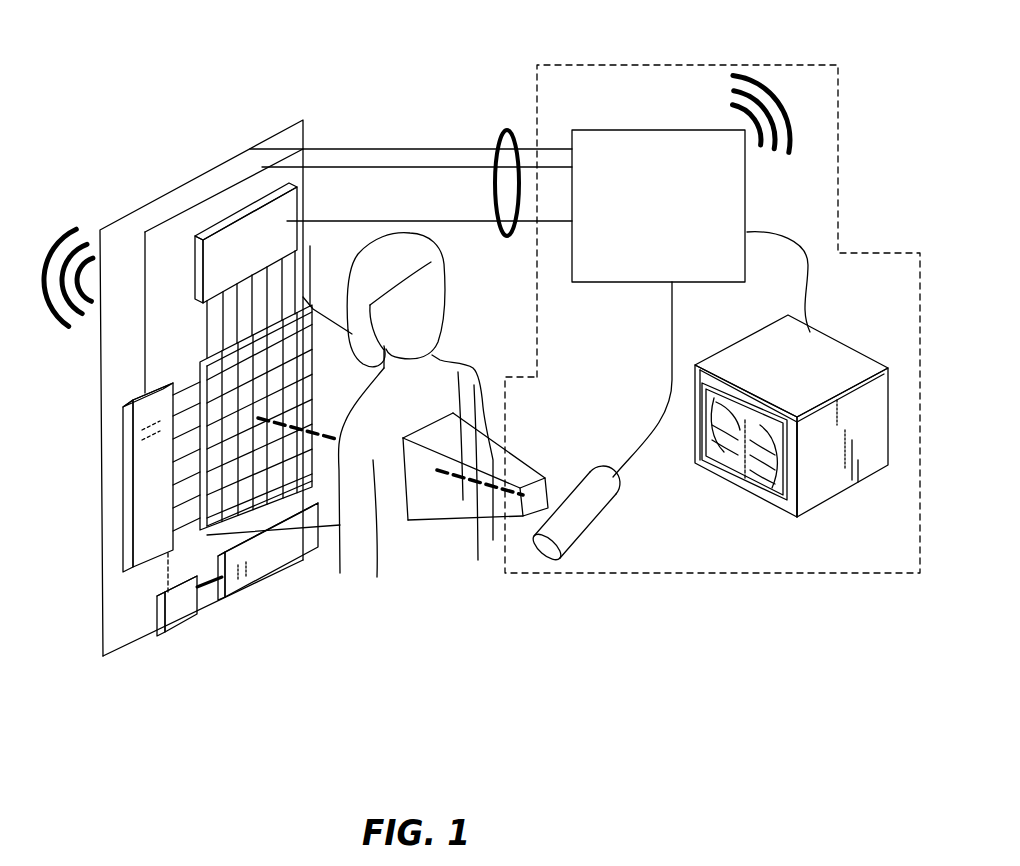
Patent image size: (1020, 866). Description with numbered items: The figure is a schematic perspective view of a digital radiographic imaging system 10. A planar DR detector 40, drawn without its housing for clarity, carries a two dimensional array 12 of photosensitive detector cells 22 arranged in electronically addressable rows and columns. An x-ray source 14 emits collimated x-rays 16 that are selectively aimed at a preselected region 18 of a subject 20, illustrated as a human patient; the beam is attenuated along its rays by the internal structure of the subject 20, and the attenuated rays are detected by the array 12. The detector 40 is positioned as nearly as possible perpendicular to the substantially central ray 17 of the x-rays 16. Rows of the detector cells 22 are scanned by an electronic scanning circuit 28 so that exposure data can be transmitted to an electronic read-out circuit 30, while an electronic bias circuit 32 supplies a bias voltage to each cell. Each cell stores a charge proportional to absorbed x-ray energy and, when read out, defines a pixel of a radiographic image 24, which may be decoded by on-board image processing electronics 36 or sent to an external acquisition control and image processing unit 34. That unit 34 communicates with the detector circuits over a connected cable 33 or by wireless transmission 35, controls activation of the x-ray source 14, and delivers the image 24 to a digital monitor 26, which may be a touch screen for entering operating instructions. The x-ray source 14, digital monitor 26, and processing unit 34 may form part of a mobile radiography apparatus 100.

The digital radiographic imaging system 10 is at (331, 29).
The two dimensional array 12 is at (300, 293).
The x-ray source 14 is at (606, 508).
The x-rays 16 is at (507, 453).
The central ray 17 is at (498, 488).
The preselected region 18 is at (447, 407).
The subject 20 is at (455, 357).
The detector cells 22 is at (228, 363).
The radiographic image 24 is at (750, 473).
The digital monitor 26 is at (837, 362).
The electronic scanning circuit 28 is at (153, 548).
The electronic read-out circuit 30 is at (230, 242).
The electronic bias circuit 32 is at (262, 568).
The connected cable 33 is at (504, 130).
The acquisition control and image processing unit 34 is at (746, 184).
The wireless transmission 35 is at (42, 258).
The on-board image processing electronics 36 is at (182, 612).
The DR detector 40 is at (86, 199).
The mobile radiography apparatus 100 is at (800, 576).